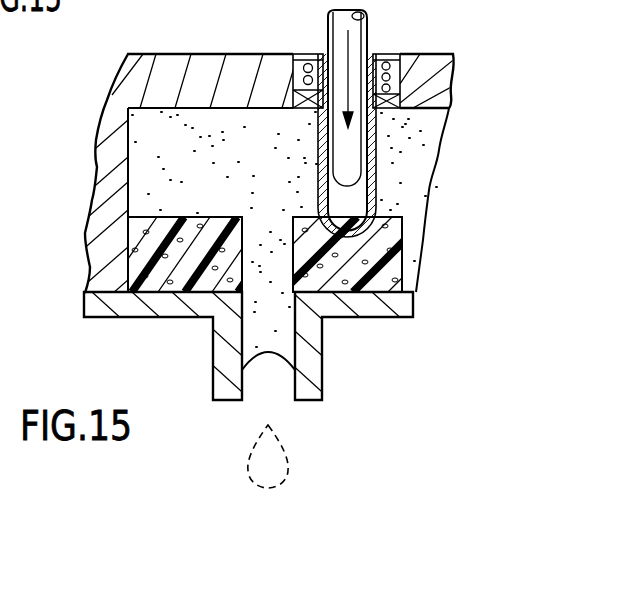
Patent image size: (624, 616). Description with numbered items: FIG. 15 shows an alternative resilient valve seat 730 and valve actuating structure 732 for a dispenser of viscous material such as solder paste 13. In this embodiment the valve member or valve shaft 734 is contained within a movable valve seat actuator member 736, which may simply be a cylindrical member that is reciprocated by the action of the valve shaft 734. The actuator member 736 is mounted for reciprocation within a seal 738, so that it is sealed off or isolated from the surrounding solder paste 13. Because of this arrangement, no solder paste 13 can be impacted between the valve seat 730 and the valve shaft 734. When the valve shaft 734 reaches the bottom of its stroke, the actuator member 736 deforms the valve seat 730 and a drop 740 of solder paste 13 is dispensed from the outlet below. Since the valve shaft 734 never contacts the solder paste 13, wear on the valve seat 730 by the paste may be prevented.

The solder paste 13 is at (156, 150).
The valve seat 730 is at (402, 262).
The valve actuating structure 732 is at (309, 44).
The valve shaft 734 is at (368, 29).
The valve seat actuator member 736 is at (372, 162).
The seal 738 is at (448, 88).
The drop 740 is at (292, 456).